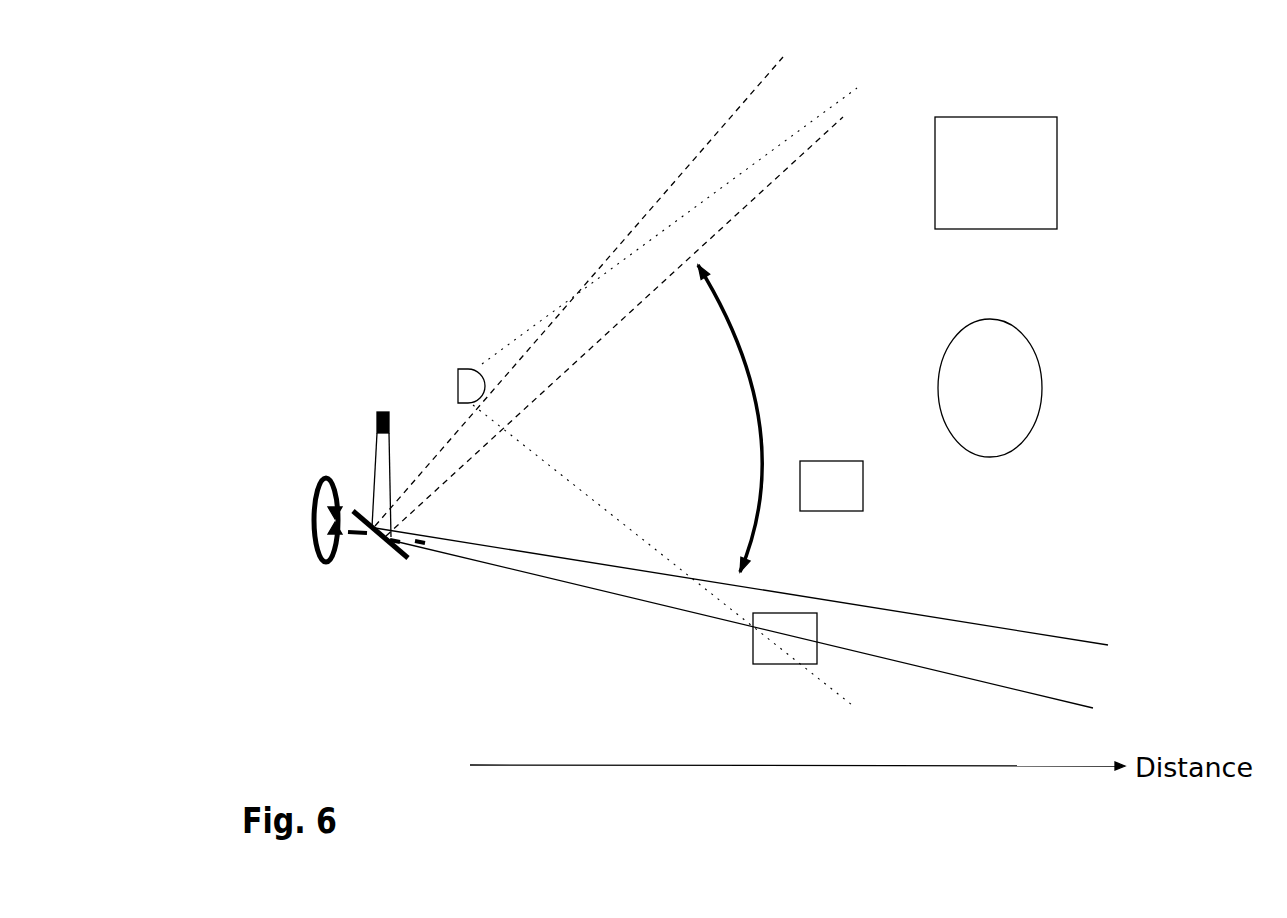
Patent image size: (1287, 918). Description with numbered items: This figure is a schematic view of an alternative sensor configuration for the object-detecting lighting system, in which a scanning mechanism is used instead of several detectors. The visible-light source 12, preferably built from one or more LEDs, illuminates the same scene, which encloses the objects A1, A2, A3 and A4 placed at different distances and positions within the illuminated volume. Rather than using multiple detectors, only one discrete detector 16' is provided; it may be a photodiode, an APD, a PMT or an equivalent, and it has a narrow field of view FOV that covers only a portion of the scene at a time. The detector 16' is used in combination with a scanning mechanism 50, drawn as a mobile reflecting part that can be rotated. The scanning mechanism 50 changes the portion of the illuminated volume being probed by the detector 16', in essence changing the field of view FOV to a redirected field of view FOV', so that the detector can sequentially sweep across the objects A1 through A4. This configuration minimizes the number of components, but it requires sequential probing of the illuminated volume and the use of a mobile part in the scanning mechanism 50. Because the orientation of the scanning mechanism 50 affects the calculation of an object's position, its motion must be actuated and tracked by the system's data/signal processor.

The visible-light source 12 is at (458, 382).
The discrete detector 16' is at (344, 474).
The scanning mechanism 50 is at (383, 540).
The object A1 is at (753, 652).
The object A2 is at (863, 500).
The object A3 is at (1037, 413).
The object A4 is at (1057, 190).
The field of view FOV is at (741, 618).
The changed field of view FOV' is at (609, 296).